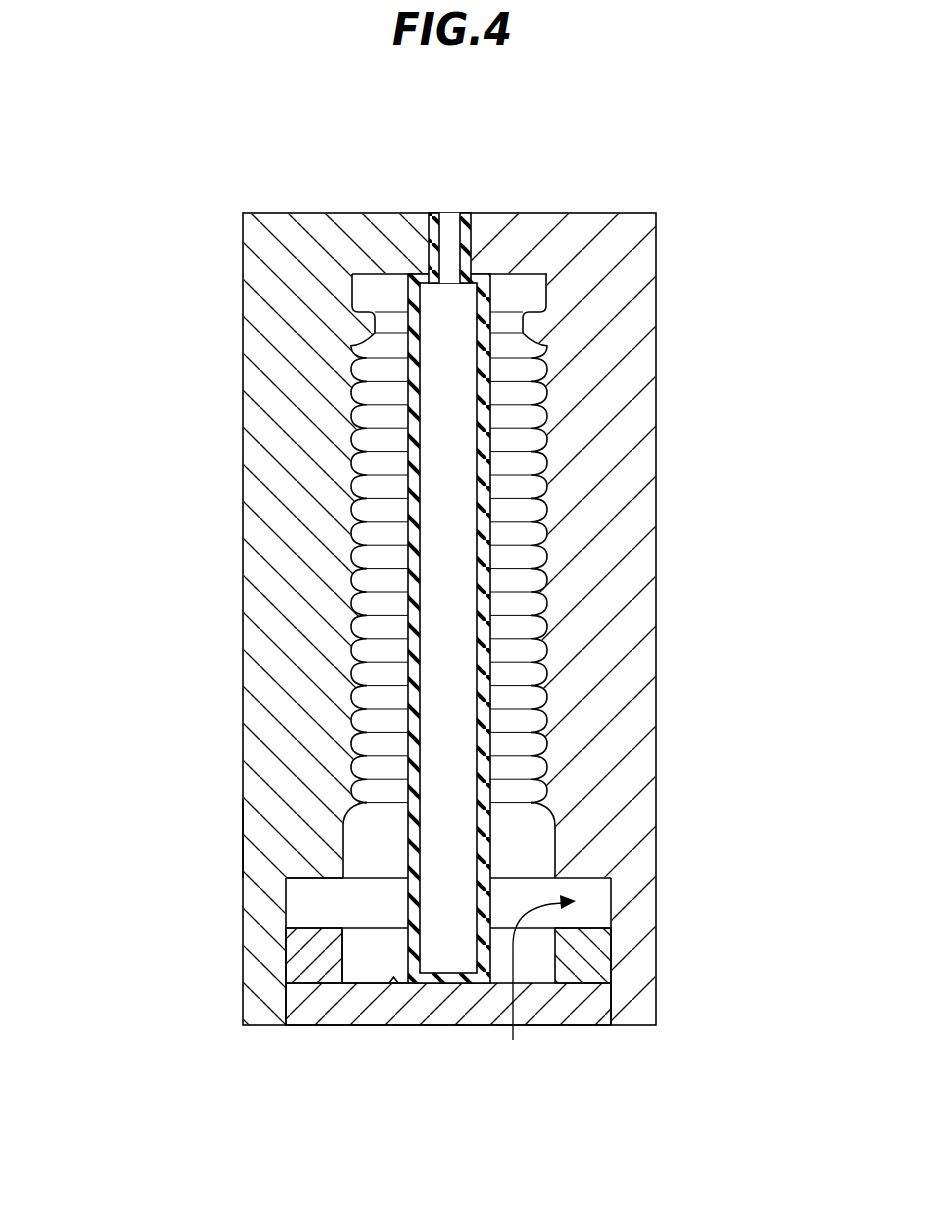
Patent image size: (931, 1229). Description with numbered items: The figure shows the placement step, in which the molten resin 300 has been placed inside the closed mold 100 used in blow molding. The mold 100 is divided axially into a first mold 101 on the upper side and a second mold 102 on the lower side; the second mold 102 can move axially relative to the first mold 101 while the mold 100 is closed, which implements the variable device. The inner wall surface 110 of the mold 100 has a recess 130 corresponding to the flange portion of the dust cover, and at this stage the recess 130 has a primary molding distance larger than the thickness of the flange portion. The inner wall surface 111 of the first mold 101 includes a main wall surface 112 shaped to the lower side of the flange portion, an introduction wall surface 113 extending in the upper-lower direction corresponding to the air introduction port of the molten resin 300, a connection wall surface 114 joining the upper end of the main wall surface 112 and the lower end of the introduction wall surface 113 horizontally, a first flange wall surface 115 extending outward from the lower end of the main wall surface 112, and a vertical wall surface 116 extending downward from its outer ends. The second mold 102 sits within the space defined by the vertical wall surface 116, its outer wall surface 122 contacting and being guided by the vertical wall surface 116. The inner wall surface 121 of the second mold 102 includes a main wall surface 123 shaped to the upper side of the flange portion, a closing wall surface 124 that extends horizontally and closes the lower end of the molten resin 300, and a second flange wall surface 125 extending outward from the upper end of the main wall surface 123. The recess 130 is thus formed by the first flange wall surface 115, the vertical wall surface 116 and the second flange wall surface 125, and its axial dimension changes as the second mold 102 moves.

The mold 100 is at (369, 630).
The first mold 101 is at (252, 975).
The second mold 102 is at (303, 1022).
The inner wall surface 110 is at (538, 867).
The inner wall surface 111 is at (553, 857).
The main wall surface 112 is at (367, 358).
The introduction wall surface 113 is at (451, 236).
The connection wall surface 114 is at (367, 287).
The first flange wall surface 115 is at (242, 822).
The vertical wall surface 116 is at (284, 875).
The inner wall surface 121 is at (548, 914).
The outer wall surface 122 is at (284, 960).
The main wall surface 123 is at (362, 985).
The closing wall surface 124 is at (387, 985).
The second flange wall surface 125 is at (303, 905).
The recess 130 is at (513, 1040).
The molten resin 300 is at (493, 372).